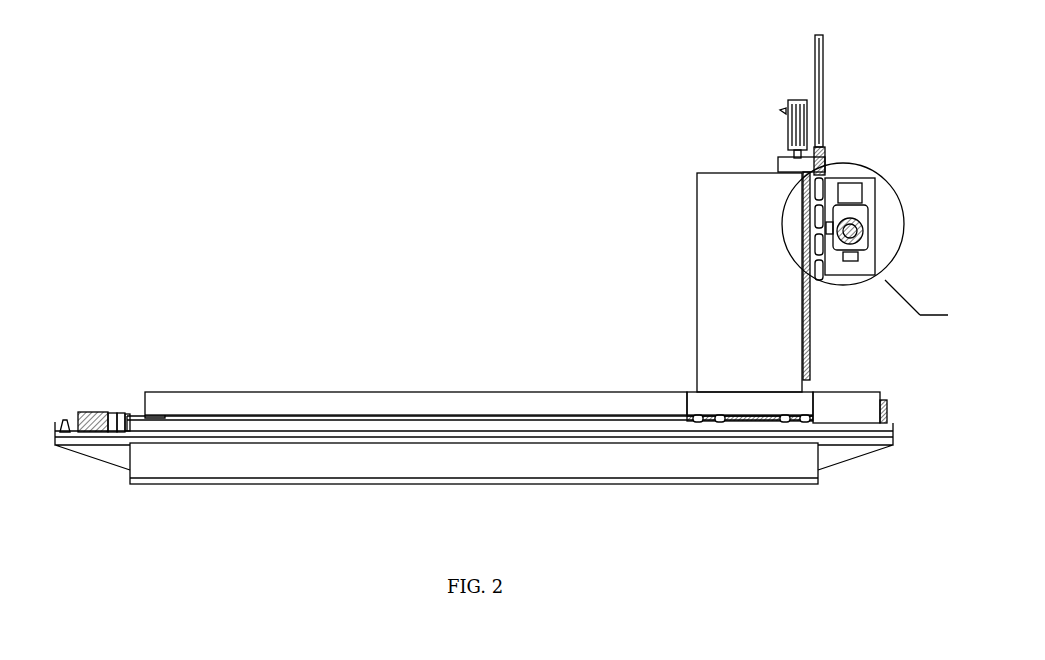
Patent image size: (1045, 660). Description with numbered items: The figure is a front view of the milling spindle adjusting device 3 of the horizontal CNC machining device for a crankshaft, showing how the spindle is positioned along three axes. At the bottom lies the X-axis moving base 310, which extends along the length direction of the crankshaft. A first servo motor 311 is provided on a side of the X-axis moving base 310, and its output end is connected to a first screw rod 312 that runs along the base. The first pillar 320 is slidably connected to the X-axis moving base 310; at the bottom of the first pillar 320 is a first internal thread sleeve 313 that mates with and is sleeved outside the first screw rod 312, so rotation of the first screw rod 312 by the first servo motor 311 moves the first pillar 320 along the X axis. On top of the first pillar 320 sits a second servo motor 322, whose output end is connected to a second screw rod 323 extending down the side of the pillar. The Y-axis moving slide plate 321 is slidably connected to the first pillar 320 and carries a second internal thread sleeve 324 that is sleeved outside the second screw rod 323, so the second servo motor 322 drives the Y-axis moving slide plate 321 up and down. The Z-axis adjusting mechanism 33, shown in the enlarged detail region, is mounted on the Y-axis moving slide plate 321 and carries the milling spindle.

The milling spindle adjusting device 3 is at (458, 188).
The X-axis moving base 310 is at (748, 462).
The first servo motor 311 is at (107, 412).
The first screw rod 312 is at (408, 416).
The first internal thread sleeve 313 is at (690, 413).
The first pillar 320 is at (718, 232).
The Y-axis moving slide plate 321 is at (828, 197).
The second servo motor 322 is at (787, 115).
The second screw rod 323 is at (808, 350).
The second internal thread sleeve 324 is at (822, 167).
The Z-axis adjusting mechanism 33 is at (858, 227).